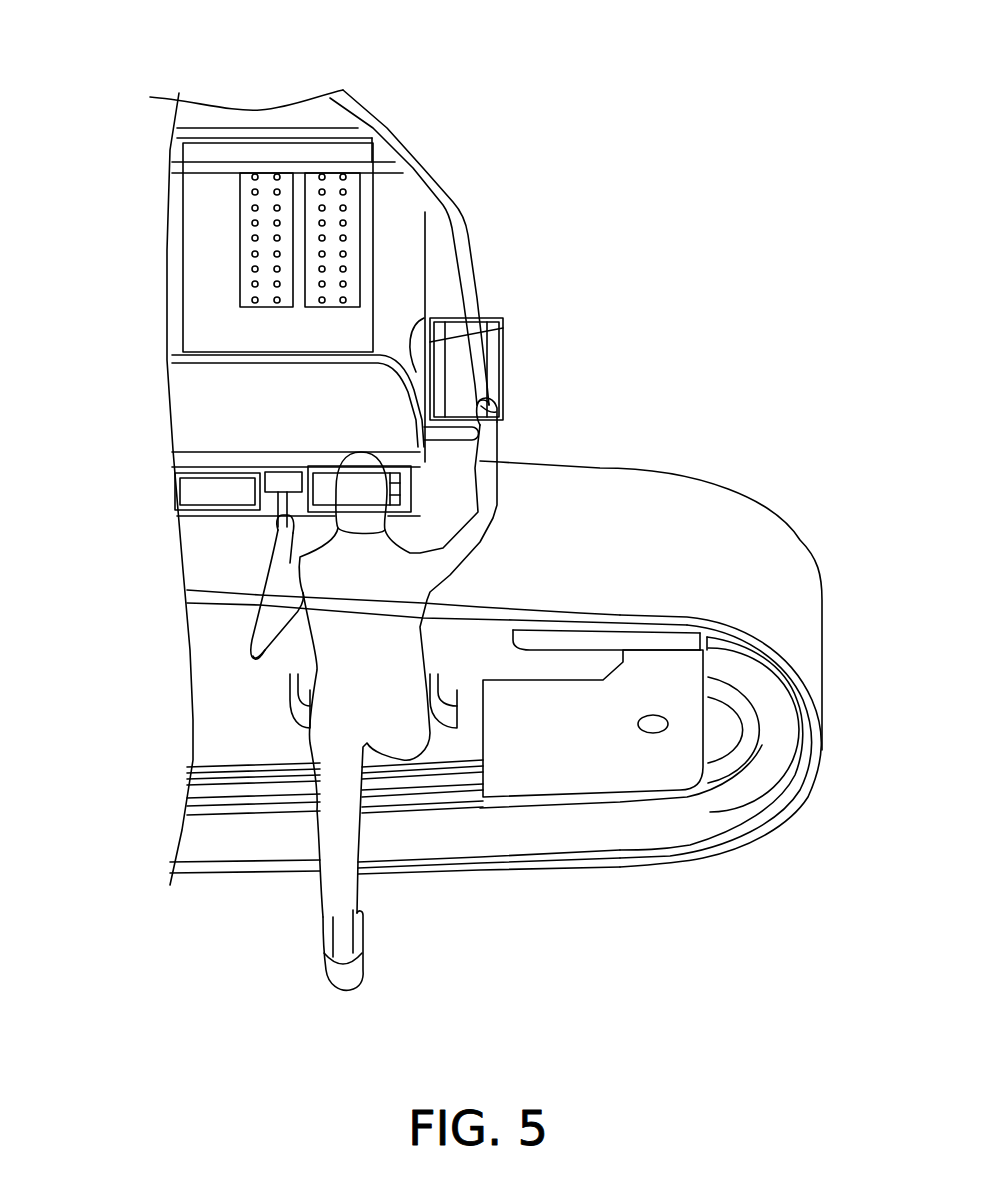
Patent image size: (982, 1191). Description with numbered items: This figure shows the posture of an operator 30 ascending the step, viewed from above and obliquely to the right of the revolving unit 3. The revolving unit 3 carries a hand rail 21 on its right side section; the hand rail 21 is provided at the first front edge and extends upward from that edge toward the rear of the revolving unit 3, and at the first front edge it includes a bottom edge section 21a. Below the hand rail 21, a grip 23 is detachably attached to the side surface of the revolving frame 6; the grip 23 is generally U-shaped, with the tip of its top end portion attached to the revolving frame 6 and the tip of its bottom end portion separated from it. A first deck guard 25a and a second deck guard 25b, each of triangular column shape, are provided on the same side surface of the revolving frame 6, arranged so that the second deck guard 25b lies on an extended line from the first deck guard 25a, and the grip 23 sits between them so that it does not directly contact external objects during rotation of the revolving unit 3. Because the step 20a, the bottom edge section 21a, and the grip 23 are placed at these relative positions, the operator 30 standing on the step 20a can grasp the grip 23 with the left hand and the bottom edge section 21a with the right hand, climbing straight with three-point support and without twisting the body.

The revolving unit 3 is at (161, 415).
The revolving frame 6 is at (420, 466).
The step 20a is at (440, 707).
The hand rail 21 is at (413, 157).
The bottom edge section 21a is at (485, 405).
The grip 23 is at (282, 518).
The first deck guard 25a is at (410, 487).
The second deck guard 25b is at (207, 487).
The operator 30 is at (347, 653).